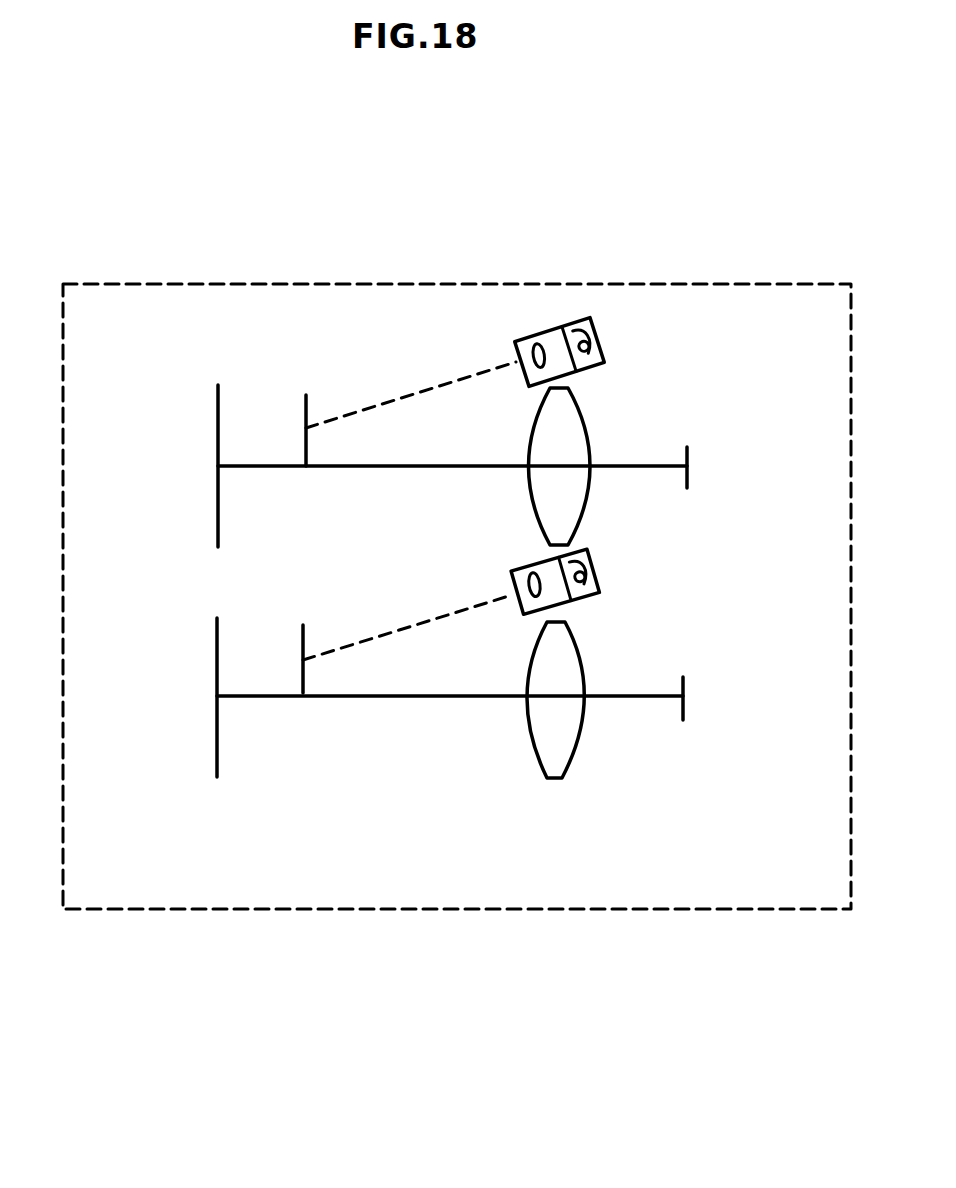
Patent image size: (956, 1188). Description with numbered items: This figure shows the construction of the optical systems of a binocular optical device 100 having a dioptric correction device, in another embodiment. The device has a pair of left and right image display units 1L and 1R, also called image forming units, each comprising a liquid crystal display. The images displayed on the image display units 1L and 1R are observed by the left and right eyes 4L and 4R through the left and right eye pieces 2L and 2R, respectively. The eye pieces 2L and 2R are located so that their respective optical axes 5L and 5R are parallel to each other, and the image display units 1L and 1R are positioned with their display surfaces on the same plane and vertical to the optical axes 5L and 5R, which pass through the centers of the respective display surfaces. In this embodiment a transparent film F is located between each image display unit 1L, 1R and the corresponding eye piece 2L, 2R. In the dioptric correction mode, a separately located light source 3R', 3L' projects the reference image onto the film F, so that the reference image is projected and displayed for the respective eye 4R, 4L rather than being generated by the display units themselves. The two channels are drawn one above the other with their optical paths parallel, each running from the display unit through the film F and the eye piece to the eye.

The binocular optical device 100 is at (720, 910).
The right image display unit 1R is at (218, 500).
The left image display unit 1L is at (217, 725).
The right eye piece 2R is at (572, 392).
The left eye piece 2L is at (555, 778).
The right light source 3R' is at (554, 294).
The left light source 3L' is at (601, 572).
The right eye 4R is at (687, 455).
The left eye 4L is at (683, 685).
The right optical axis 5R is at (430, 467).
The left optical axis 5L is at (420, 697).
The transparent film F is at (306, 398).